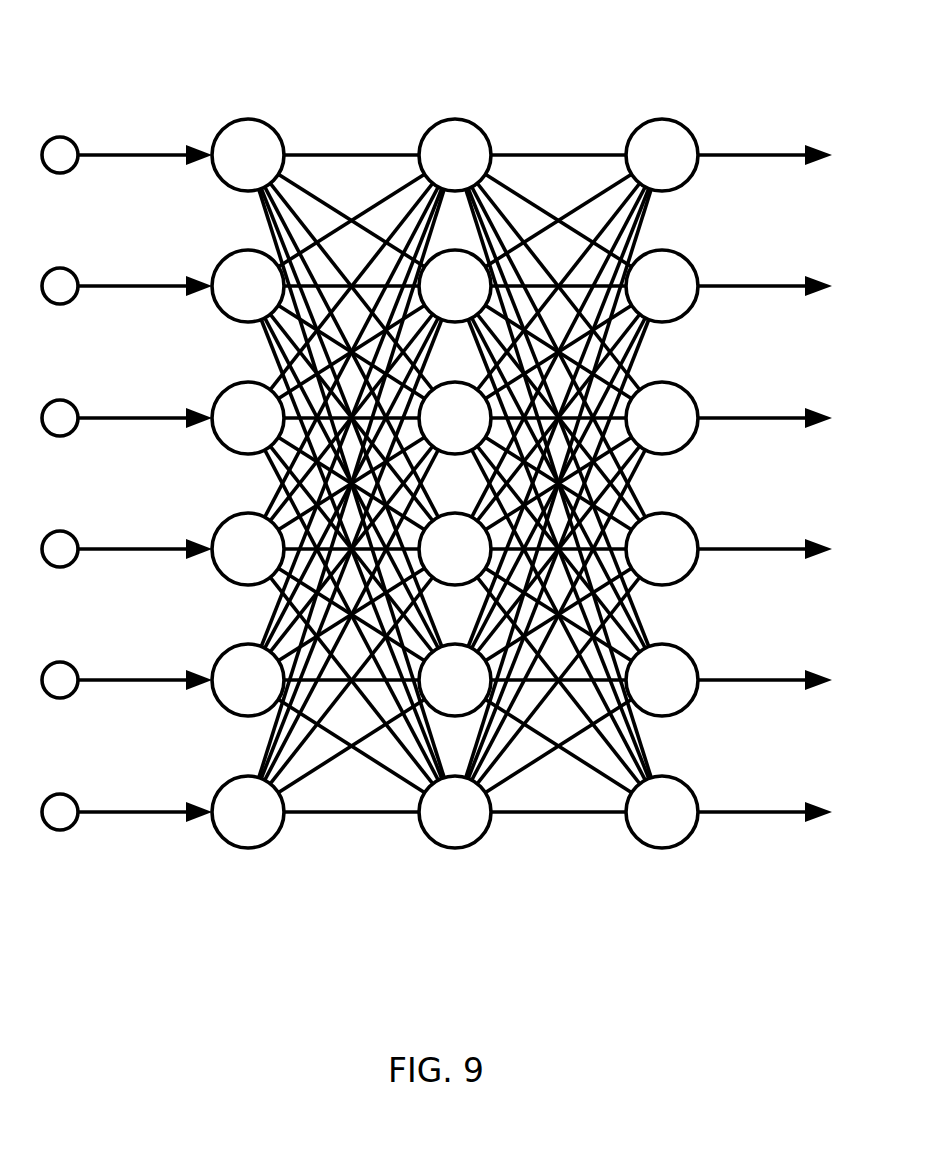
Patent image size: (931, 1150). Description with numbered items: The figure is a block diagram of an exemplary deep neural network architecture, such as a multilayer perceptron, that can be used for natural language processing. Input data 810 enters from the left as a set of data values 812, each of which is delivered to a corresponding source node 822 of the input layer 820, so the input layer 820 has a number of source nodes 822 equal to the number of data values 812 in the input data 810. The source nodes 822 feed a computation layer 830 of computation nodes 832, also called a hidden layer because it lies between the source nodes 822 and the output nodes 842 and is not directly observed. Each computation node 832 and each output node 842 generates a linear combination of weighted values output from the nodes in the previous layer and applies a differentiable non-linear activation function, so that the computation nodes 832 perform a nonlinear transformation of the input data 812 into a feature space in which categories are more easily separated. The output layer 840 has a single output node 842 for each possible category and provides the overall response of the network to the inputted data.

The input data 810 is at (125, 503).
The data value 812 is at (60, 820).
The input layer 820 is at (306, 503).
The source node 822 is at (248, 840).
The computation layer 830 is at (511, 503).
The computation node 832 is at (455, 840).
The output layer 840 is at (720, 503).
The output node 842 is at (662, 840).